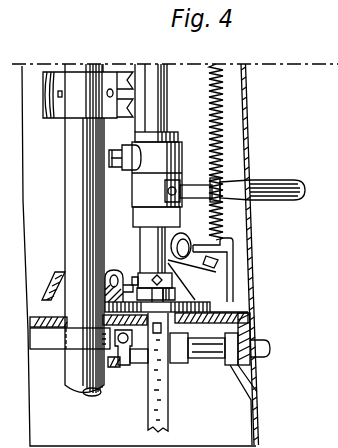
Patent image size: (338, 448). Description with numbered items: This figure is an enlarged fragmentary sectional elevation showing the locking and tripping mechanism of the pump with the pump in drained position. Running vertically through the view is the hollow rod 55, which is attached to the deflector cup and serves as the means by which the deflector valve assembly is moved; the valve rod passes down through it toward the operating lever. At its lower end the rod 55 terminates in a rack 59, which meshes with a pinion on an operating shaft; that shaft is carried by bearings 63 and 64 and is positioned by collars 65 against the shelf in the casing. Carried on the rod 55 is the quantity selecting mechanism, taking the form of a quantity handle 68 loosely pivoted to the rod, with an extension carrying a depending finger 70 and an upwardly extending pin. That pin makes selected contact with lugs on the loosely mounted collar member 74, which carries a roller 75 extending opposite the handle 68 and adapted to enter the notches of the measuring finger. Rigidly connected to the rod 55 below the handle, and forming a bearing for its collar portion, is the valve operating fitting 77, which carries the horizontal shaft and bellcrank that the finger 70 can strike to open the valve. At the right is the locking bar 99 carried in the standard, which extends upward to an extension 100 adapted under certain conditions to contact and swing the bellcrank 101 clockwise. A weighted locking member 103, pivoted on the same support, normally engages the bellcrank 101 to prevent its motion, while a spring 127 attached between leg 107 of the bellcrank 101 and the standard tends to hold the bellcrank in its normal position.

The hollow rod 55 is at (68, 186).
The rack 59 is at (148, 421).
The bearing 63 is at (236, 345).
The bearing 64 is at (110, 367).
The collars 65 is at (124, 366).
The quantity handle 68 is at (292, 182).
The depending finger 70 is at (78, 106).
The collar member 74 is at (176, 133).
The roller 75 is at (109, 158).
The valve operating fitting 77 is at (133, 222).
The locking bar 99 is at (258, 404).
The extension 100 is at (215, 243).
The bellcrank 101 is at (187, 235).
The weighted bellcrank or locking member 103 is at (61, 272).
The leg 107 is at (215, 263).
The spring 127 is at (224, 115).